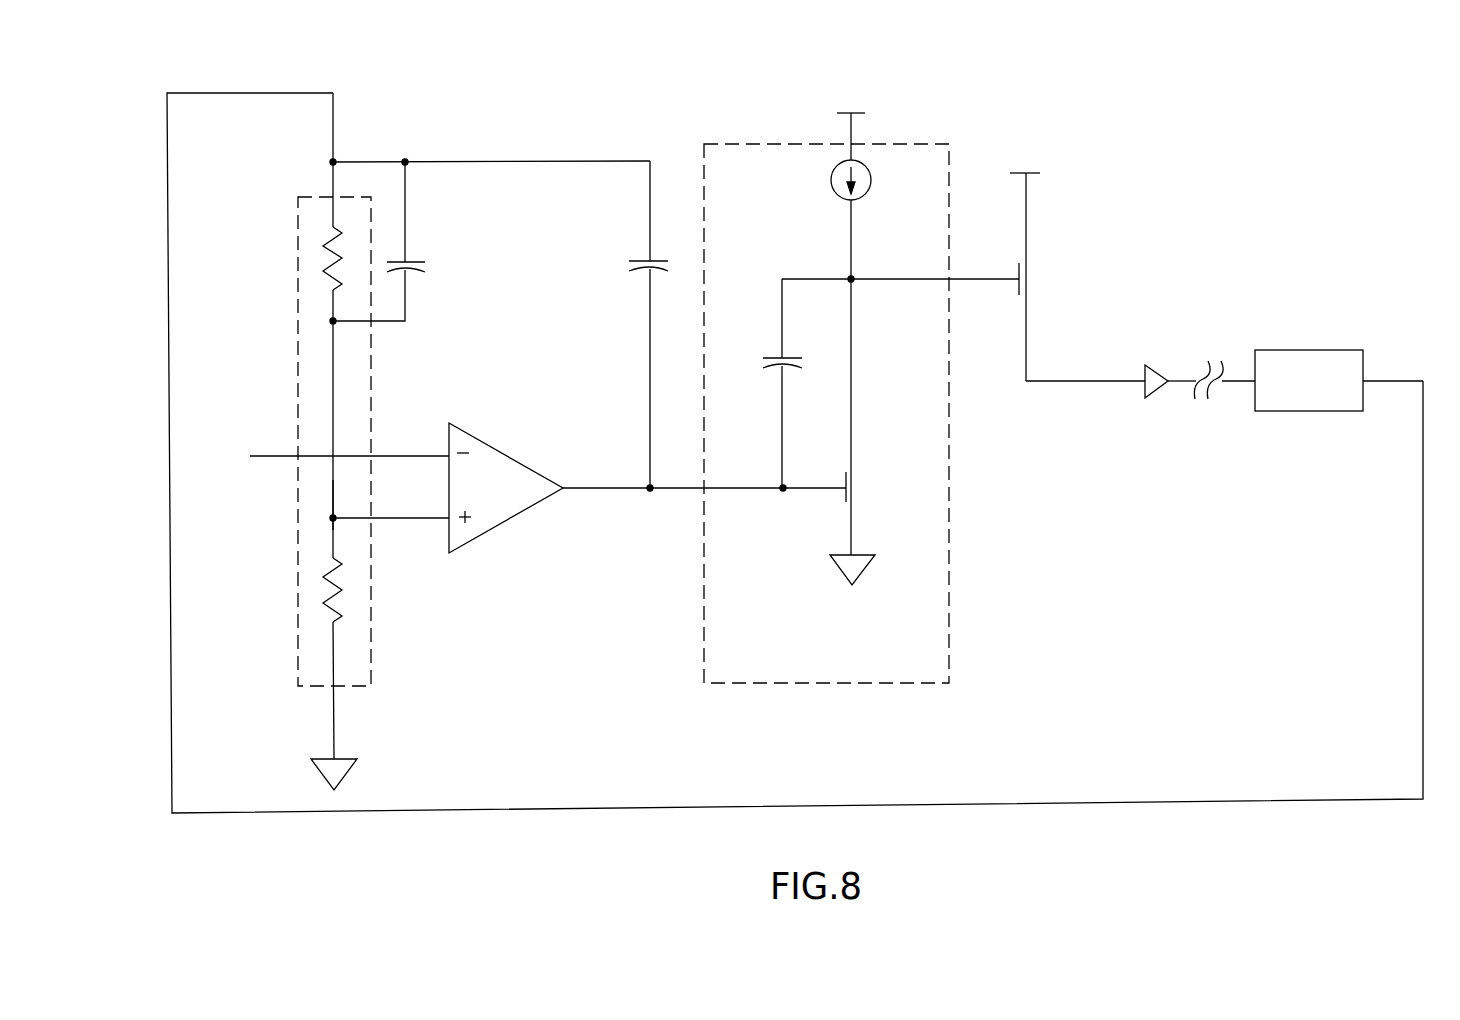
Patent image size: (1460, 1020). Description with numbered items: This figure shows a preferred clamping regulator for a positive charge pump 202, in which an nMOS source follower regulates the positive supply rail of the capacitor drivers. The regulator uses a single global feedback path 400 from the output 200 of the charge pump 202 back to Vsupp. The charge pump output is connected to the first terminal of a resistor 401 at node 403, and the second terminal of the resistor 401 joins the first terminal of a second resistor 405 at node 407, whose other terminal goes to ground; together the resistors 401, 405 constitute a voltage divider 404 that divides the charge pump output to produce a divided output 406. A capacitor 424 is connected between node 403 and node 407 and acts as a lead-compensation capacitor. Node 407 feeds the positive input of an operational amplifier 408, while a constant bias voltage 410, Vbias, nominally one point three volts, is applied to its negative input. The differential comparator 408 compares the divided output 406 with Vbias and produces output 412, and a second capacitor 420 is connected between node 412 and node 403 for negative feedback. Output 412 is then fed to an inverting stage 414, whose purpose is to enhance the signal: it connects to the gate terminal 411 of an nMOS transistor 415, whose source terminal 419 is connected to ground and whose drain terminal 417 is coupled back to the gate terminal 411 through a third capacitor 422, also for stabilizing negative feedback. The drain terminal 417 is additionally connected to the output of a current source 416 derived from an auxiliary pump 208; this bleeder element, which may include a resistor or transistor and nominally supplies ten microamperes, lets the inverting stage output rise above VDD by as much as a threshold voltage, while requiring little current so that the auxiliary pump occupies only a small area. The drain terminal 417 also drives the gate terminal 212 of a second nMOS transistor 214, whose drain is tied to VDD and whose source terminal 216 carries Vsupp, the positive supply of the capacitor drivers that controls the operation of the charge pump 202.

The output of charge pump 200 is at (1392, 381).
The charge pump 202 is at (1325, 350).
The auxiliary pump 208 is at (924, 88).
The gate terminal of second nMOS transistor 212 is at (978, 282).
The second nMOS transistor 214 is at (1017, 272).
The source terminal of transistor 214 216 is at (1078, 383).
The regulator feedback loop 400 is at (334, 112).
The resistor 401 is at (333, 262).
The node 403 is at (353, 162).
The voltage divider 404 is at (298, 637).
The second resistor 405 is at (333, 590).
The divided output 406 is at (407, 520).
The node 407 is at (333, 490).
The operational amplifier 408 is at (512, 519).
The constant bias voltage 410 is at (407, 455).
The gate terminal of nMOS transistor 415 411 is at (745, 490).
The output of operational amplifier 412 is at (592, 490).
The inverting stage 414 is at (948, 600).
The nMOS transistor 415 is at (842, 482).
The current source 416 is at (871, 183).
The drain terminal of transistor 415 417 is at (851, 397).
The source terminal of transistor 415 419 is at (852, 528).
The second capacitor 420 is at (642, 261).
The third capacitor 422 is at (777, 356).
The capacitor 424 is at (410, 260).